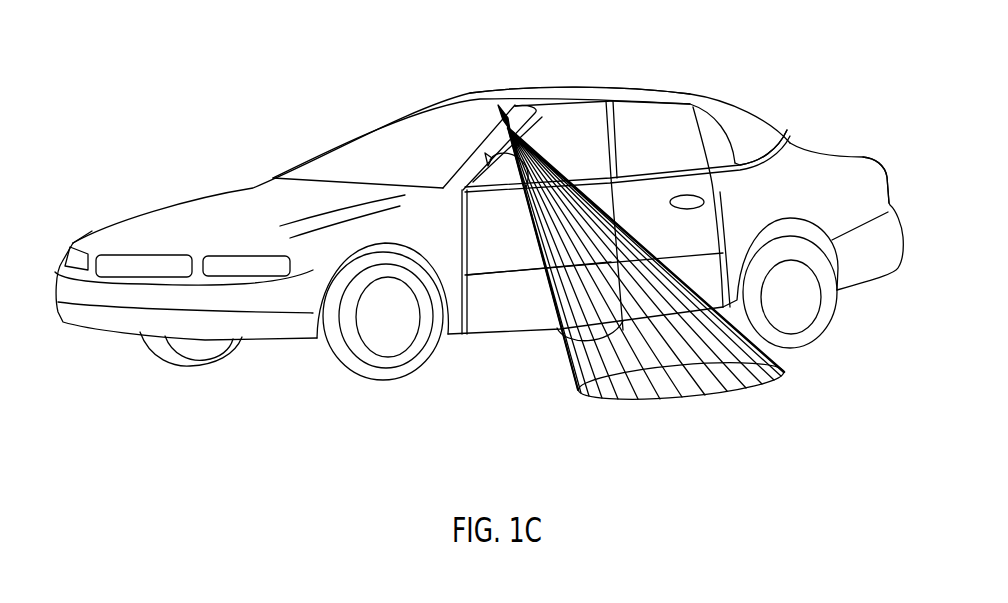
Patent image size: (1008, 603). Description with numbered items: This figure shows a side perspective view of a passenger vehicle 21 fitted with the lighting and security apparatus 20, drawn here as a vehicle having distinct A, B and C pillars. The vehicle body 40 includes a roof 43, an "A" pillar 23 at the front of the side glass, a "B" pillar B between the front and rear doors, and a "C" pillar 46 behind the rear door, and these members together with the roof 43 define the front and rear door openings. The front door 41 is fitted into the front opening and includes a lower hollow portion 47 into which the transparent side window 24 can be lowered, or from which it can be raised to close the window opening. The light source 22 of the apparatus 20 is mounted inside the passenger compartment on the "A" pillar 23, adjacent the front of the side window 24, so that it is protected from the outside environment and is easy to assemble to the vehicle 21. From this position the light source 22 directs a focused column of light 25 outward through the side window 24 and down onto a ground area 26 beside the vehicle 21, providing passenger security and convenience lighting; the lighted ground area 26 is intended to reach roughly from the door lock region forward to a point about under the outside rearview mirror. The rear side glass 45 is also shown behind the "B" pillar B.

The lighting and security apparatus 20 is at (500, 103).
The vehicle 21 is at (747, 93).
The light source 22 is at (540, 130).
The "A" pillar 23 is at (470, 157).
The side window 24 is at (583, 113).
The "B" pillar B is at (615, 113).
The light 25 is at (562, 283).
The ground area 26 is at (780, 373).
The vehicle body 40 is at (860, 155).
The front door 41 is at (493, 297).
The roof 43 is at (472, 92).
The rear side window 45 is at (660, 133).
The "C" pillar 46 is at (763, 145).
The lower hollow portion 47 is at (512, 238).